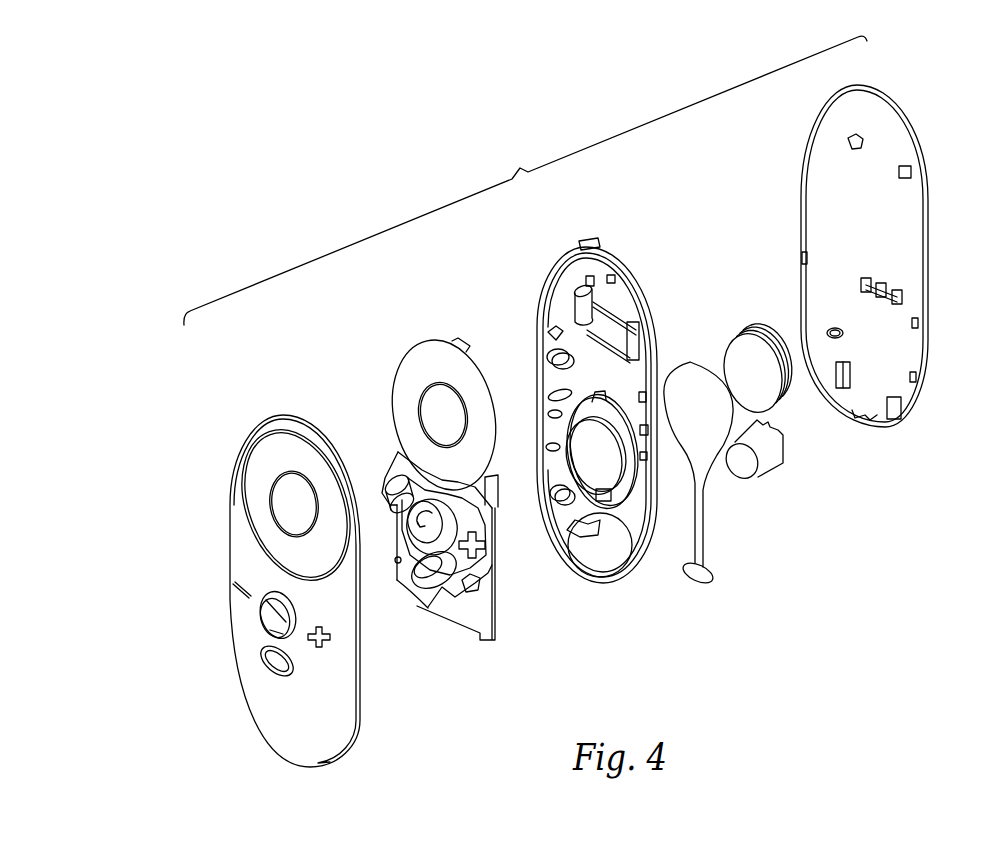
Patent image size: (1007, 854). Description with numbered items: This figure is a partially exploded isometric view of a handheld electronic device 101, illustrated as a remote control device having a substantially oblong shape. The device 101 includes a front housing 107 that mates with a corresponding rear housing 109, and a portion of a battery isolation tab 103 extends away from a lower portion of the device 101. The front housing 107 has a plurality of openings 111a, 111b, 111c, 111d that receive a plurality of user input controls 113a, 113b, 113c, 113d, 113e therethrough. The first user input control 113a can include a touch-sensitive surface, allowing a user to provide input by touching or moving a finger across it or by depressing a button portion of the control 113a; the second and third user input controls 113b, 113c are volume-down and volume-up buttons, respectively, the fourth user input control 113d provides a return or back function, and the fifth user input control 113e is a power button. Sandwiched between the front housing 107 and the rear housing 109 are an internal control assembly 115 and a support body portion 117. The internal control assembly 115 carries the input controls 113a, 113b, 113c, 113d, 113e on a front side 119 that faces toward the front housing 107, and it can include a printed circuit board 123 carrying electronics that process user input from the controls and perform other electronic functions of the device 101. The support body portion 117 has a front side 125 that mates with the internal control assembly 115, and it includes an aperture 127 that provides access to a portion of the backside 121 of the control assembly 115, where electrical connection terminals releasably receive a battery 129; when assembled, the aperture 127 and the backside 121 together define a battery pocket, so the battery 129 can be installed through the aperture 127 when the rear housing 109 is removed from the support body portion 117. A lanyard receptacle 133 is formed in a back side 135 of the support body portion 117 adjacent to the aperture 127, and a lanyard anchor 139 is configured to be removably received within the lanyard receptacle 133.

The handheld electronic device 101 is at (525, 180).
The battery isolation tab 103 is at (705, 552).
The front housing 107 is at (247, 425).
The rear housing 109 is at (920, 133).
The opening 111a is at (280, 432).
The opening 111b is at (235, 585).
The opening 111c is at (263, 614).
The opening 111d is at (330, 640).
The first user input control 113a is at (398, 412).
The second user input control 113b is at (387, 495).
The third user input control 113c is at (400, 557).
The fourth user input control 113d is at (495, 556).
The fifth user input control 113e is at (425, 587).
The internal control assembly 115 is at (405, 336).
The support body portion 117 is at (566, 248).
The front side 119 is at (495, 638).
The backside 121 is at (497, 528).
The printed circuit board 123 is at (470, 585).
The front side 125 is at (543, 327).
The aperture 127 is at (560, 420).
The battery 129 is at (745, 330).
The lanyard receptacle 133 is at (600, 577).
The back side 135 is at (648, 568).
The lanyard anchor 139 is at (770, 472).